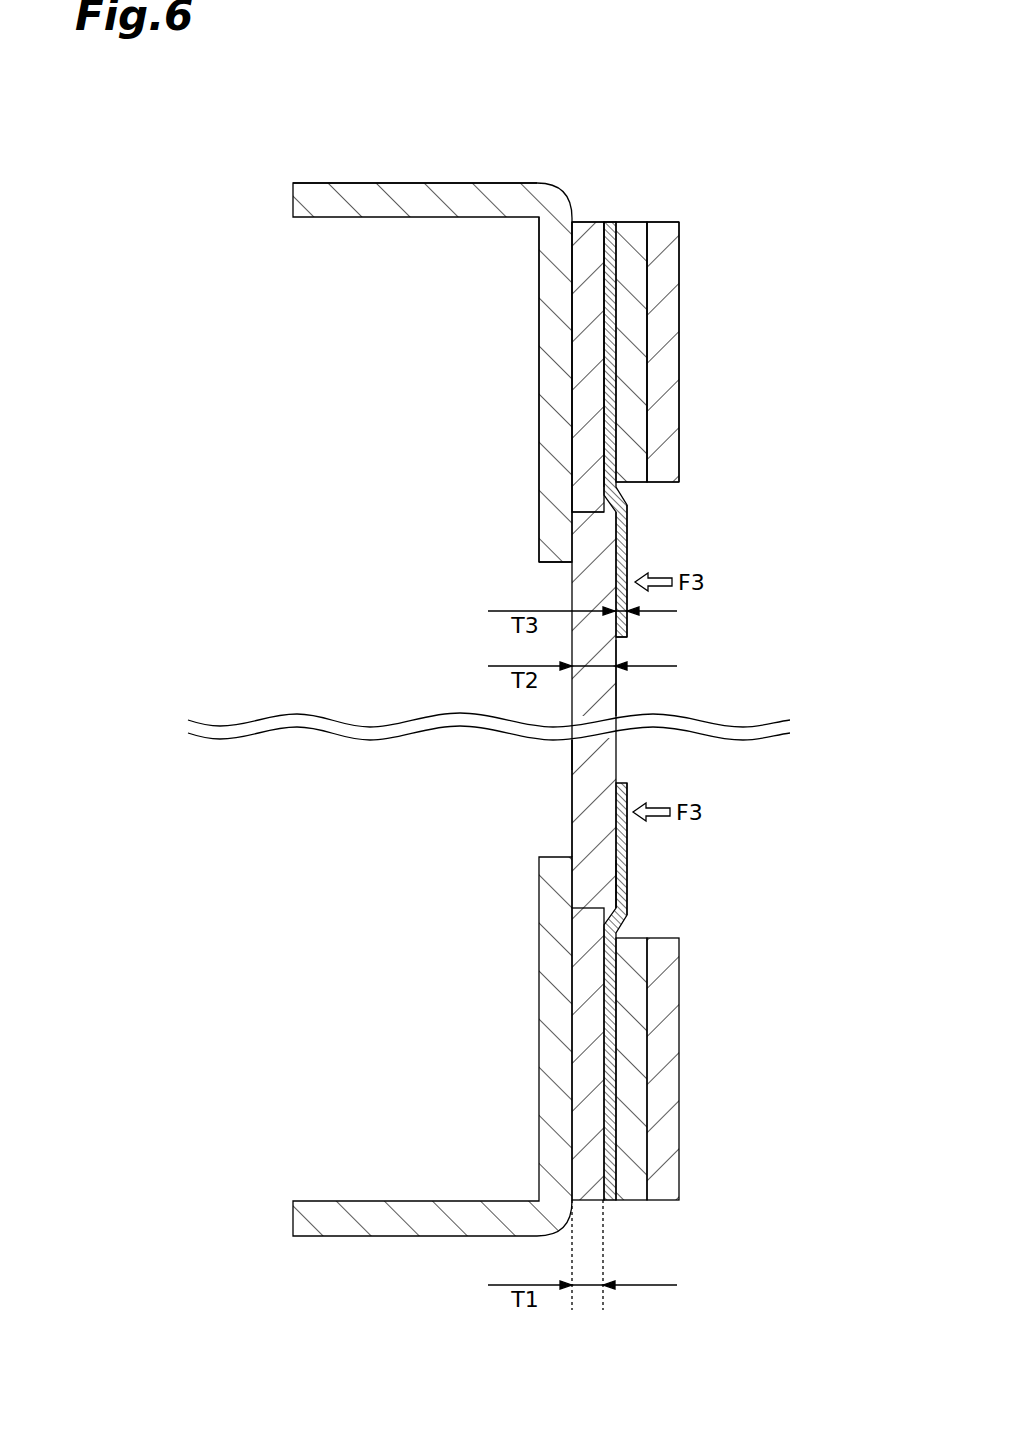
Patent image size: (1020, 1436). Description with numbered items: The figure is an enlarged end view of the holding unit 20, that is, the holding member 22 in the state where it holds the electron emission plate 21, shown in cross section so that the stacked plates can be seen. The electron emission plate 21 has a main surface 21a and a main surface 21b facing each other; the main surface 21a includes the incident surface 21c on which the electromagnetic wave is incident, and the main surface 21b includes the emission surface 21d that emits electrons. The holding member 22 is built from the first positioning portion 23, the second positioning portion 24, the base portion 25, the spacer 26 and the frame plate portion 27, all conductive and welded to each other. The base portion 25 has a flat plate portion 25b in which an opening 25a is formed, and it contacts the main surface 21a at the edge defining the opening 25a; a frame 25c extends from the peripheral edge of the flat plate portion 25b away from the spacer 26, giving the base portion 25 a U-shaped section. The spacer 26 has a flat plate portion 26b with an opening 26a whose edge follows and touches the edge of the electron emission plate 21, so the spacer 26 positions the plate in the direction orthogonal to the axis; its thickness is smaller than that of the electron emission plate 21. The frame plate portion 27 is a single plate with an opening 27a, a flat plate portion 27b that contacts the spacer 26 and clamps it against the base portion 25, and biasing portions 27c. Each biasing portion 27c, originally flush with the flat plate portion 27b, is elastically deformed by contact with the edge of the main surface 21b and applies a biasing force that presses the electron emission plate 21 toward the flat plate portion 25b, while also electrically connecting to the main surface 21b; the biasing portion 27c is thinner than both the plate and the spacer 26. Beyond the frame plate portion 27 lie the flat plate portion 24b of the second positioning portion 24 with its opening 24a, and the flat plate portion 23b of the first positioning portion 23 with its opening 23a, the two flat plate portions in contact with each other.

The holding unit 20 is at (768, 126).
The electron emission plate 21 is at (608, 748).
The main surface 21a is at (572, 790).
The main surface 21b is at (618, 878).
The incident surface 21c is at (572, 753).
The emission surface 21d is at (617, 697).
The holding member 22 is at (720, 118).
The first positioning portion 23 is at (667, 220).
The opening 23a is at (668, 484).
The flat plate portion 23b is at (679, 288).
The second positioning portion 24 is at (632, 220).
The opening 24a is at (637, 486).
The flat plate portion 24b is at (647, 330).
The base portion 25 is at (531, 190).
The opening 25a is at (553, 565).
The flat plate portion 25b is at (539, 276).
The frame 25c is at (355, 192).
The spacer 26 is at (590, 220).
The opening 26a is at (588, 514).
The flat plate portion 26b is at (572, 325).
The frame plate portion 27 is at (611, 220).
The opening 27a is at (622, 640).
The flat plate portion 27b is at (604, 372).
The biasing portion 27c is at (627, 542).